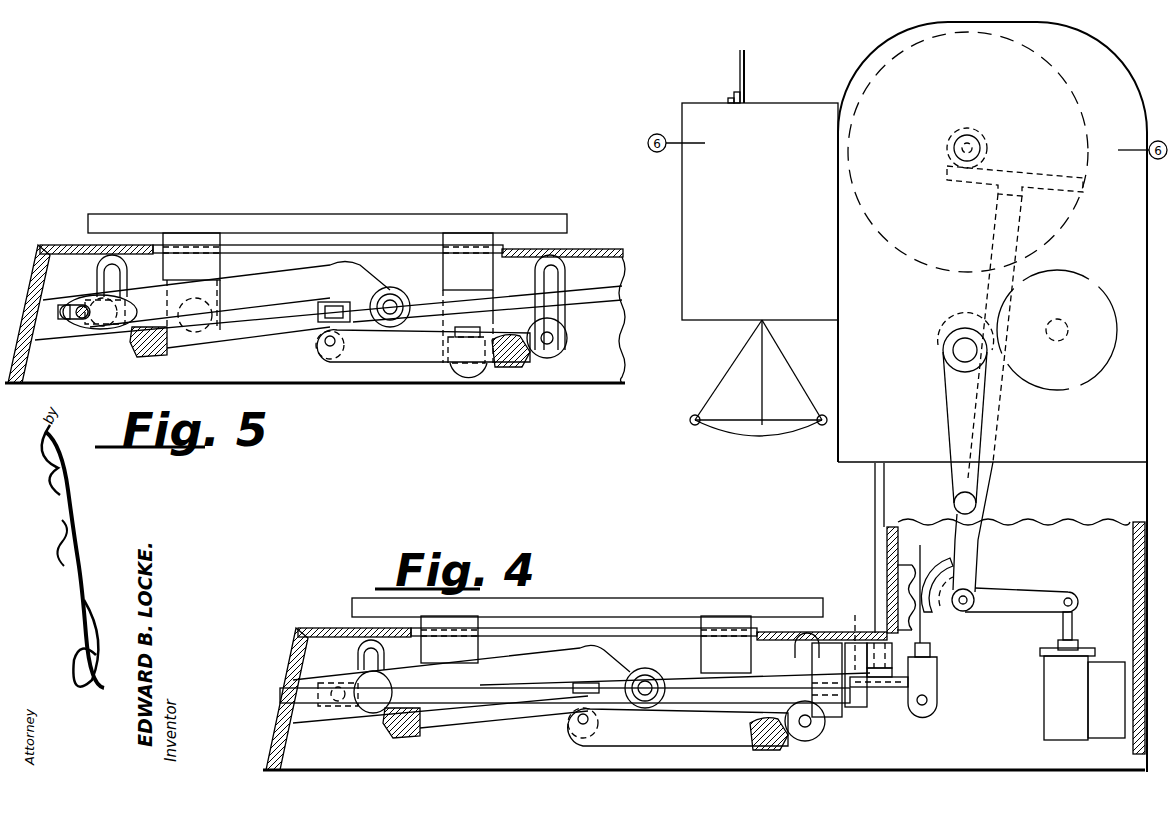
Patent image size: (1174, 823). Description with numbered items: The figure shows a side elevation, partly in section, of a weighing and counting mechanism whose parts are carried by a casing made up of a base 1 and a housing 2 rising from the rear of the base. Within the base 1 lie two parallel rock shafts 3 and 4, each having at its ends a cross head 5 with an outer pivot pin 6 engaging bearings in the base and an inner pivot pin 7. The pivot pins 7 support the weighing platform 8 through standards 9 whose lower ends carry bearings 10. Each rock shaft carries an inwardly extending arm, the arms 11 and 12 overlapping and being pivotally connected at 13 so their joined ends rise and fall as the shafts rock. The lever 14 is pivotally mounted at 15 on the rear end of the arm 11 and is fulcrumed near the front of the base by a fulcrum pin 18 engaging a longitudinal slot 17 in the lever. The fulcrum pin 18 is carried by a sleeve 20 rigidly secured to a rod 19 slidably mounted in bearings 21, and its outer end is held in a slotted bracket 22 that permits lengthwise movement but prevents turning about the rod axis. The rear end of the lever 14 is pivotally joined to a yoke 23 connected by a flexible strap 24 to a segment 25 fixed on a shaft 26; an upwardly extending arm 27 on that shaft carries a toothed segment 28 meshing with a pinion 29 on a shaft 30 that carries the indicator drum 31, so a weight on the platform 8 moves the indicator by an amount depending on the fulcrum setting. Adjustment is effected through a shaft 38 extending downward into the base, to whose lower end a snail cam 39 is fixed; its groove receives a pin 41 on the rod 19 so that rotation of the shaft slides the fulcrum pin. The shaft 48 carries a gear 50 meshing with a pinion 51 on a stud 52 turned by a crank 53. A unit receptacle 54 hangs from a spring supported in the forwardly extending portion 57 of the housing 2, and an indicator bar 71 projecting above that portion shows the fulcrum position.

In FIG. 5, the base 1 is at (40, 272).
In FIG. 4, the base 1 is at (576, 697).
In FIG. 4, the housing 2 is at (992, 397).
In FIG. 5, the rock shaft 3 is at (160, 356).
In FIG. 4, the rock shaft 3 is at (408, 733).
In FIG. 5, the rock shaft 4 is at (520, 362).
In FIG. 4, the rock shaft 4 is at (778, 743).
In FIG. 5, the cross head 5 is at (152, 290).
In FIG. 4, the cross head 5 is at (809, 730).
In FIG. 5, the pivot pin 6 is at (95, 290).
In FIG. 4, the pivot pin 6 is at (588, 682).
In FIG. 5, the pivot pin 7 is at (205, 338).
In FIG. 5, the weighing platform 8 is at (336, 221).
In FIG. 4, the weighing platform 8 is at (587, 594).
In FIG. 5, the standard 9 is at (190, 245).
In FIG. 4, the standard 9 is at (586, 644).
In FIG. 5, the bearing 10 is at (464, 327).
In FIG. 5, the arm 11 is at (273, 328).
In FIG. 4, the arm 11 is at (504, 730).
In FIG. 5, the arm 12 is at (423, 346).
In FIG. 4, the arm 12 is at (678, 727).
In FIG. 5, the pivotal connection 13 is at (340, 302).
In FIG. 4, the pivotal connection 13 is at (569, 722).
In FIG. 5, the lever 14 is at (625, 298).
In FIG. 4, the lever 14 is at (575, 673).
In FIG. 5, the pivotal mounting 15 is at (392, 298).
In FIG. 4, the pivotal mounting 15 is at (649, 678).
In FIG. 5, the slot 17 is at (96, 330).
In FIG. 4, the slot 17 is at (373, 692).
In FIG. 5, the fulcrum pin 18 is at (80, 320).
In FIG. 4, the fulcrum pin 18 is at (336, 672).
In FIG. 4, the rod 19 is at (440, 721).
In FIG. 4, the sleeve 20 is at (339, 716).
In FIG. 4, the bearing 21 is at (558, 692).
In FIG. 5, the slotted bracket 22 is at (62, 320).
In FIG. 4, the yoke 23 is at (937, 673).
In FIG. 4, the flexible strap 24 is at (926, 637).
In FIG. 4, the segment 25 is at (944, 566).
In FIG. 4, the shaft 26 is at (970, 596).
In FIG. 4, the arm 27 is at (980, 551).
In FIG. 4, the toothed segment 28 is at (1059, 178).
In FIG. 4, the pinion 29 is at (988, 144).
In FIG. 4, the shaft 30 is at (955, 145).
In FIG. 4, the indicator drum 31 is at (1070, 212).
In FIG. 4, the shaft 38 is at (874, 560).
In FIG. 4, the snail cam 39 is at (879, 680).
In FIG. 4, the pin 41 is at (850, 632).
In FIG. 4, the shaft 48 is at (1064, 326).
In FIG. 4, the gear 50 is at (1057, 330).
In FIG. 4, the pinion 51 is at (953, 330).
In FIG. 4, the stud 52 is at (962, 350).
In FIG. 4, the crank 53 is at (955, 406).
In FIG. 4, the unit receptacle 54 is at (773, 430).
In FIG. 4, the forwardly extending portion 57 is at (794, 107).
In FIG. 4, the indicator bar 71 is at (745, 80).